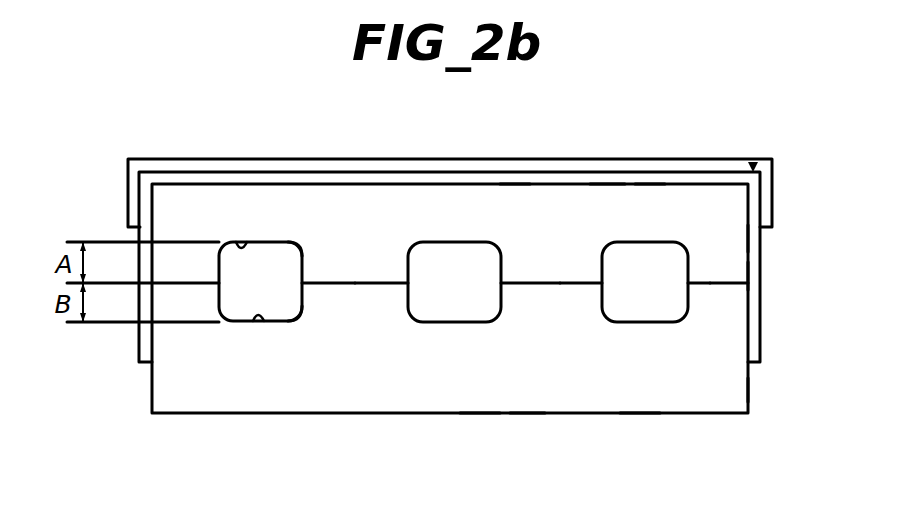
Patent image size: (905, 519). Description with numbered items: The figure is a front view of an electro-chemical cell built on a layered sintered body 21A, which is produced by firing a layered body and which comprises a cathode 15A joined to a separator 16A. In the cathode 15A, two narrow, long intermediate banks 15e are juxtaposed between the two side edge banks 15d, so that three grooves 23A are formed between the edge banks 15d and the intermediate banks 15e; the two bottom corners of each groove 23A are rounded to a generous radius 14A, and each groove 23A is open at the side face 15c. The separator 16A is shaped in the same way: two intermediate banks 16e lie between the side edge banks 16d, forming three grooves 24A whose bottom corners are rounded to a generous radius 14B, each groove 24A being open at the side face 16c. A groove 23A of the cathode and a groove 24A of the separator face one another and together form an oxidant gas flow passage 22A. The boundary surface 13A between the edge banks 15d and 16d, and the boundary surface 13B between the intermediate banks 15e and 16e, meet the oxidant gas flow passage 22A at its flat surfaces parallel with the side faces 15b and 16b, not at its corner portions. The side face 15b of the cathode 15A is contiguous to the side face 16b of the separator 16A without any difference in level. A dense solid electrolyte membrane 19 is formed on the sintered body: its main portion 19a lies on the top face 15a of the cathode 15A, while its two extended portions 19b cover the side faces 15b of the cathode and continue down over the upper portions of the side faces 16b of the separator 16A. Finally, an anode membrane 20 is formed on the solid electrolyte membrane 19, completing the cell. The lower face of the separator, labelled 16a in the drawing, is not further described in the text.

The boundary surface 13A is at (197, 284).
The boundary surface 13B is at (385, 284).
The generous radius 14A is at (300, 250).
The generous radius 14B is at (293, 321).
The cathode 15A is at (725, 220).
The top face 15a is at (605, 184).
The side face 15b is at (752, 237).
The side face 15c is at (647, 207).
The side edge bank 15d is at (168, 272).
The intermediate bank 15e is at (347, 267).
The separator 16A is at (642, 395).
The second substrate lower surface 16a is at (478, 414).
The side face 16b is at (748, 390).
The side face 16c is at (522, 393).
The side edge bank 16d is at (713, 296).
The intermediate bank 16e is at (533, 296).
The solid electrolyte membrane 19 is at (448, 177).
The main portion 19a is at (513, 180).
The extended portion 19b is at (753, 273).
The anode membrane 20 is at (273, 165).
The layered sintered body 21A is at (753, 172).
The oxidant gas flow passage 22A is at (232, 295).
The groove 23A is at (243, 248).
The groove 24A is at (258, 319).